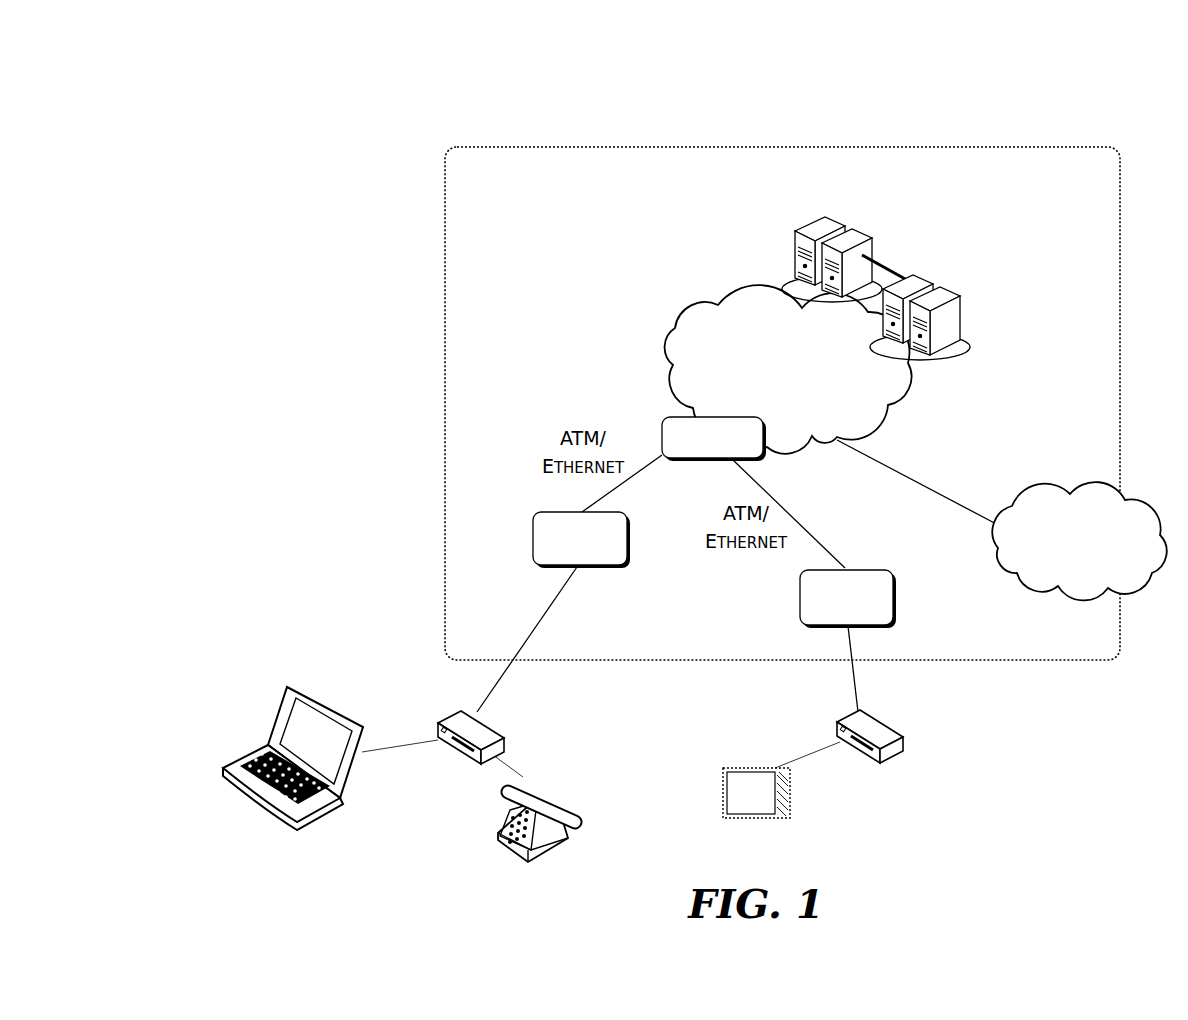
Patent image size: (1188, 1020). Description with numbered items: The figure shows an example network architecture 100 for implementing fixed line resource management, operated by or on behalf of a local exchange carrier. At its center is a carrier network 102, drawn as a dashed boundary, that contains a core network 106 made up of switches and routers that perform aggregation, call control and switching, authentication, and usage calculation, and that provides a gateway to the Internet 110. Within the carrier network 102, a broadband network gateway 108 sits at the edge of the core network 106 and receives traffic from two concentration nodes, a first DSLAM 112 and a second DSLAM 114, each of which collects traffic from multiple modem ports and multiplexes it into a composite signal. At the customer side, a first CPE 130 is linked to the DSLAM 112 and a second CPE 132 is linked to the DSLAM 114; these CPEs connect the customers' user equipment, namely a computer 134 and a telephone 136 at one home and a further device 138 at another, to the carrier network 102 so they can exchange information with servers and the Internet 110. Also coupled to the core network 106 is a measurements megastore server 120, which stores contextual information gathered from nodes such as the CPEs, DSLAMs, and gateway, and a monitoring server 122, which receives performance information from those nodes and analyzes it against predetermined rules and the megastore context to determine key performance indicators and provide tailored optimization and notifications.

The network architecture 100 is at (230, 72).
The carrier network 102 is at (782, 403).
The core network 106 is at (788, 369).
The broadband network gateway 108 is at (661, 417).
The Internet 110 is at (1079, 541).
The digital subscriber line access multiplexer 112 is at (533, 518).
The digital subscriber line access multiplexer 114 is at (889, 570).
The measurements megastore server 120 is at (827, 218).
The monitoring server 122 is at (921, 278).
The customer premises equipment 130 is at (493, 725).
The customer premises equipment 132 is at (877, 722).
The user equipment 134 is at (300, 688).
The user equipment 136 is at (557, 802).
The user equipment 138 is at (748, 768).